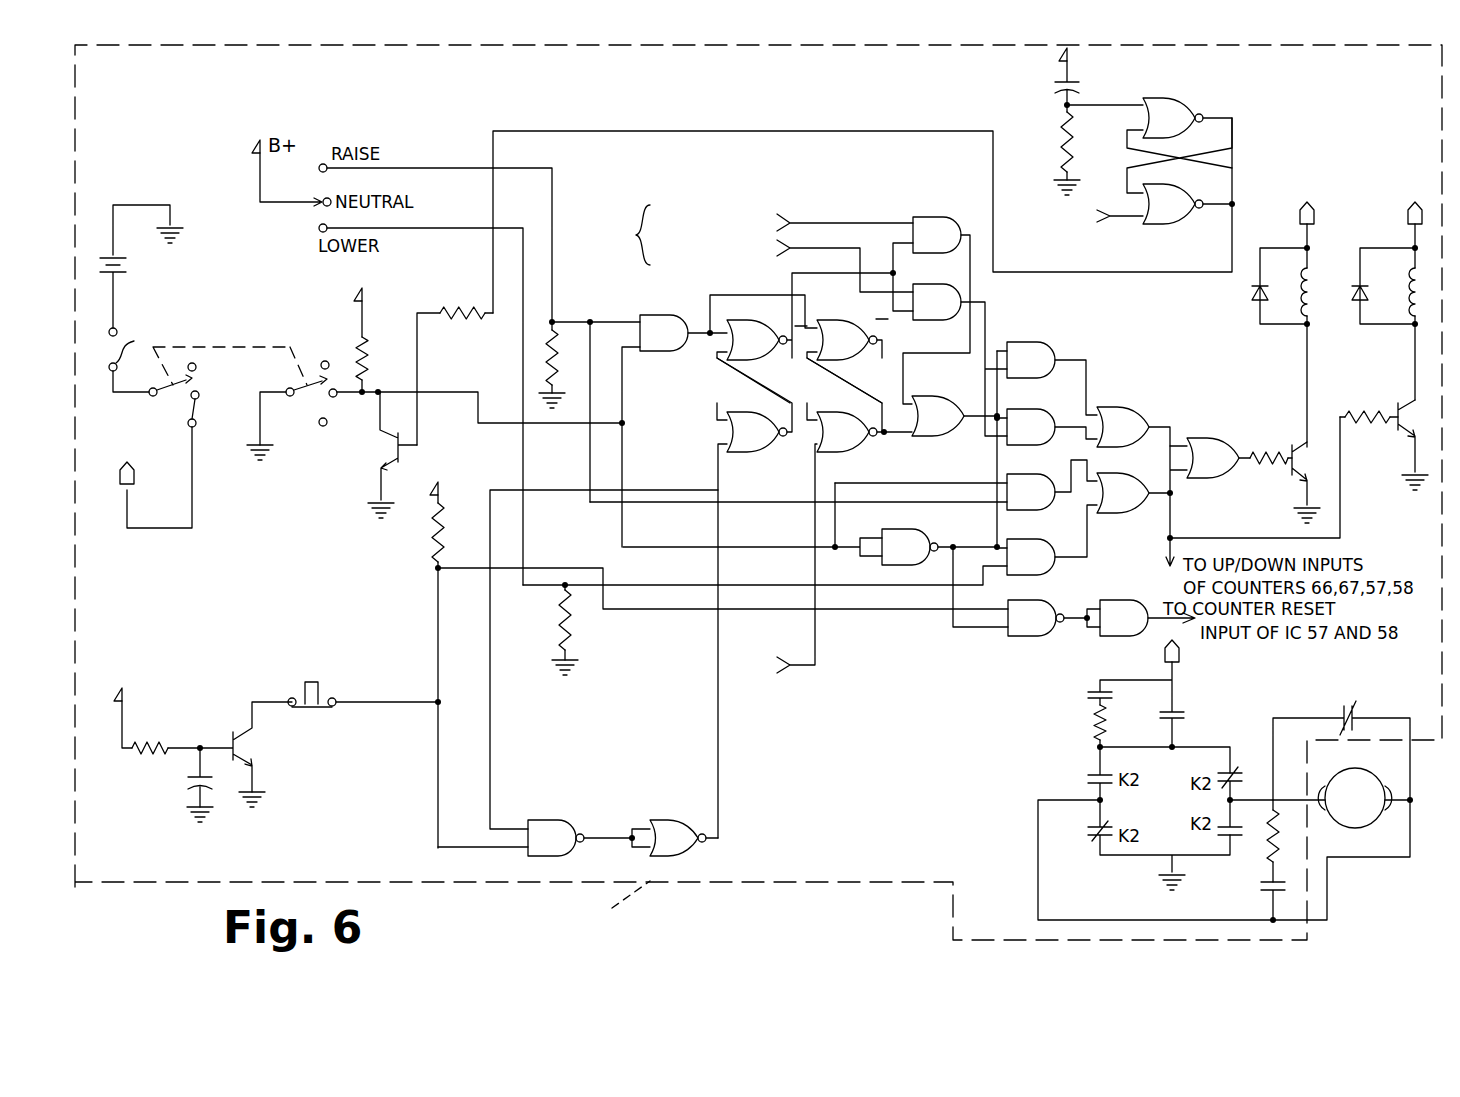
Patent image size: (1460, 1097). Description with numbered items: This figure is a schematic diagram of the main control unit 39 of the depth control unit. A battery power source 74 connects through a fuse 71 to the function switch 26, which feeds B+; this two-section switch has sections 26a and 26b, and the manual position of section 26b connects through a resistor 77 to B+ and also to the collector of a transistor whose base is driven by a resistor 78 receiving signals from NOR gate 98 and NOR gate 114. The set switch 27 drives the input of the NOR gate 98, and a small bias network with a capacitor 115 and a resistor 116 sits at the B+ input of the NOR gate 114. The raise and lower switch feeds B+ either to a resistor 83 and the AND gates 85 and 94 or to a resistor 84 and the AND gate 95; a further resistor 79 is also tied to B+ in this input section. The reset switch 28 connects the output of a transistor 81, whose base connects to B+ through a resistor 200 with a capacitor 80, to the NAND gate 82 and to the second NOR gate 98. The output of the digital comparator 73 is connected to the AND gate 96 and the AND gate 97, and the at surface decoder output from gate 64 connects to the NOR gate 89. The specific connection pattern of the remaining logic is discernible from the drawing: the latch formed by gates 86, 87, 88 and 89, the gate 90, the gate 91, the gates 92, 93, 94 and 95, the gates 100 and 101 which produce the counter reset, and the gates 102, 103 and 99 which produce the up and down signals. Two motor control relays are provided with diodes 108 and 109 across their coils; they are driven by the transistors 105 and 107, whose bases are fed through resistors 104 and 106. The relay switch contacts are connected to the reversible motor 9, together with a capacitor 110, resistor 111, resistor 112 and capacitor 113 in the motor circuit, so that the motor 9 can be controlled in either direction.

The reversible motor 9 is at (1370, 826).
The function switch 26 is at (217, 444).
The switch section 26a is at (228, 390).
The switch section 26b is at (313, 388).
The set switch 27 is at (1082, 233).
The reset switch 28 is at (317, 706).
The main control unit 39 is at (927, 881).
The at surface decoder output gate 64 is at (827, 711).
The fuse 71 is at (130, 355).
The digital comparator 73 is at (738, 239).
The battery power source 74 is at (128, 258).
The resistor 77 is at (369, 364).
The resistor 78 is at (456, 322).
The resistor 79 is at (420, 543).
The capacitor 80 is at (184, 786).
The transistor 81 is at (256, 764).
The NAND gate 82 is at (546, 818).
The resistor 83 is at (560, 370).
The resistor 84 is at (571, 622).
The AND gate 85 is at (666, 352).
The logic gate 86 is at (766, 328).
The logic gate 87 is at (766, 449).
The logic gate 88 is at (848, 328).
The NOR gate 89 is at (856, 449).
The logic gate 90 is at (932, 400).
The logic gate 91 is at (916, 541).
The logic gate 92 is at (1041, 342).
The logic gate 93 is at (1028, 412).
The AND gate 94 is at (1048, 462).
The AND gate 95 is at (1040, 545).
The AND gate 96 is at (919, 218).
The AND gate 97 is at (942, 291).
The NOR gate 98 is at (1186, 220).
The logic gate 99 is at (1206, 438).
The logic gate 100 is at (1053, 602).
The logic gate 101 is at (1129, 597).
The logic gate 102 is at (1125, 512).
The logic gate 103 is at (1119, 407).
The resistor 104 is at (1260, 452).
The transistor 105 is at (1294, 480).
The resistor 106 is at (1366, 426).
The transistor 107 is at (1408, 399).
The diode 108 is at (1252, 297).
The diode 109 is at (1358, 284).
The capacitor 110 is at (1096, 686).
The resistor 111 is at (1097, 721).
The resistor 112 is at (1270, 846).
The capacitor 113 is at (1262, 892).
The NOR gate 114 is at (1170, 96).
The capacitor 115 is at (1058, 81).
The resistor 116 is at (1060, 123).
The resistor 200 is at (162, 736).